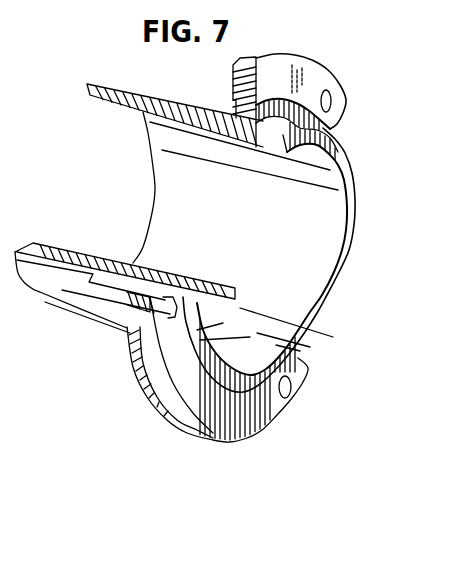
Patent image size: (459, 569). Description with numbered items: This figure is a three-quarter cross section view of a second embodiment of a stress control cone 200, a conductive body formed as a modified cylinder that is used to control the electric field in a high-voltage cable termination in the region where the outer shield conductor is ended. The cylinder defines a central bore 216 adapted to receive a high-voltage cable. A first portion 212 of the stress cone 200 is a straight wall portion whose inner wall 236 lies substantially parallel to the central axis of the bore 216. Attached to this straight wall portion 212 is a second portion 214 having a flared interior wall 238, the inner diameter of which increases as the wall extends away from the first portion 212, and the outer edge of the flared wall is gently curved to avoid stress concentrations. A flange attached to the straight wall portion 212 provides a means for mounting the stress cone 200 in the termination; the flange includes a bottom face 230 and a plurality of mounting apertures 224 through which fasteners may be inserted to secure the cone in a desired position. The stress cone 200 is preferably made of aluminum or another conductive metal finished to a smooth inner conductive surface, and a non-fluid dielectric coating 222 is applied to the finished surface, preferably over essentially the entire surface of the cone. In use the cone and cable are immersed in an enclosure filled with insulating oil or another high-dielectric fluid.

The stress control cone 200 is at (362, 204).
The first portion 212 is at (332, 100).
The second portion 214 is at (142, 95).
The central bore 216 is at (222, 252).
The dielectric coating 222 is at (16, 286).
The mounting apertures 224 is at (294, 387).
The bottom face 230 is at (237, 420).
The inner wall 236 is at (300, 305).
The flared interior wall 238 is at (177, 178).